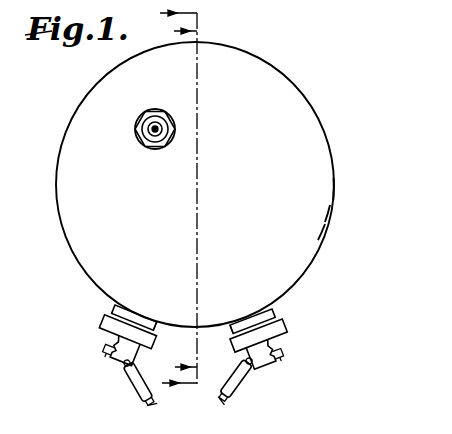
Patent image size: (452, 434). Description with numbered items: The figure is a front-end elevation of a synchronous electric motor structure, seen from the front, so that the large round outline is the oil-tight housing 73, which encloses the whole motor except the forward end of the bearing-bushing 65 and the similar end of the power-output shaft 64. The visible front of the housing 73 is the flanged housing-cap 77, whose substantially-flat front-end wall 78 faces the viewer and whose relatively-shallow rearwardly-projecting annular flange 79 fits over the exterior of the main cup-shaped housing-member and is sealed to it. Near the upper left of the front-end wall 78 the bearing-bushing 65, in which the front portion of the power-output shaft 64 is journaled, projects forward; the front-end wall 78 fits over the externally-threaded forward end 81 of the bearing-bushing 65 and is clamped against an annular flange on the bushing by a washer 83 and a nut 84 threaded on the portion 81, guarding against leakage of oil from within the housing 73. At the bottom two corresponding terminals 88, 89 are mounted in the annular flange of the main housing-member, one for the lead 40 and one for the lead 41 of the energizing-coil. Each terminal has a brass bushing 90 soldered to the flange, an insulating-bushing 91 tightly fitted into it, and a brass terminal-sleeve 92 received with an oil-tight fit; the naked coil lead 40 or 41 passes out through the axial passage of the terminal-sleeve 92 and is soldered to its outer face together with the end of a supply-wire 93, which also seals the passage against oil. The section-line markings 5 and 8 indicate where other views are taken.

The housing 73 is at (310, 107).
The housing-cap 77 is at (333, 184).
The front-end wall 78 is at (326, 214).
The annular flange 79 is at (323, 234).
The section line 5 is at (171, 199).
The section line 8 is at (179, 199).
The nut 84 is at (160, 110).
The washer 83 is at (136, 125).
The externally-threaded forward end 81 is at (143, 134).
The bearing-bushing 65 is at (151, 144).
The power-output shaft 64 is at (155, 132).
The terminal 88 is at (115, 307).
The terminal 89 is at (272, 311).
The insulating-bushing 91 is at (292, 332).
The bushing 90 is at (218, 333).
The terminal-sleeve 92 is at (245, 348).
The lead 40 is at (109, 352).
The lead 41 is at (278, 357).
The supply-wire 93 is at (237, 387).